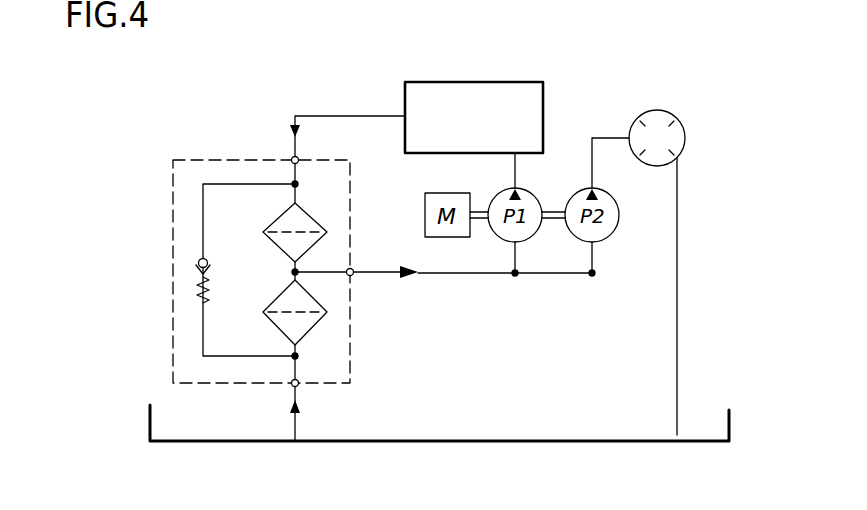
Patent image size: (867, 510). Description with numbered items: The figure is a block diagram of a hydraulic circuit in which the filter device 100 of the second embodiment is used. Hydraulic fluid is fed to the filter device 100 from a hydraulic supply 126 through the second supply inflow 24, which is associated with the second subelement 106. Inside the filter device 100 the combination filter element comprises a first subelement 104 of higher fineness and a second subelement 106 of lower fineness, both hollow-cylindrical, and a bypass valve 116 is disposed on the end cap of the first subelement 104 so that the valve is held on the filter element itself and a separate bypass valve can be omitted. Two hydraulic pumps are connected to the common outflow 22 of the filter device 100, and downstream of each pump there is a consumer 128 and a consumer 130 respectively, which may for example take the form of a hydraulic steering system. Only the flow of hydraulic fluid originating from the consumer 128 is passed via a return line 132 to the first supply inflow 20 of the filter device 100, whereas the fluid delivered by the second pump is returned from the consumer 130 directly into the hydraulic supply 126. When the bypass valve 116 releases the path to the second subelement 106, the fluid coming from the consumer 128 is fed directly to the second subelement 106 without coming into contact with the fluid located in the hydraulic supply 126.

The first supply inflow 20 is at (291, 156).
The common outflow 22 is at (354, 270).
The second supply inflow 24 is at (298, 388).
The filter device 100 is at (233, 267).
The first subelement 104 is at (322, 213).
The second subelement 106 is at (325, 325).
The bypass valve 116 is at (172, 288).
The hydraulic supply 126 is at (173, 440).
The consumer 128 is at (437, 100).
The consumer 130 is at (658, 125).
The return line 132 is at (350, 114).